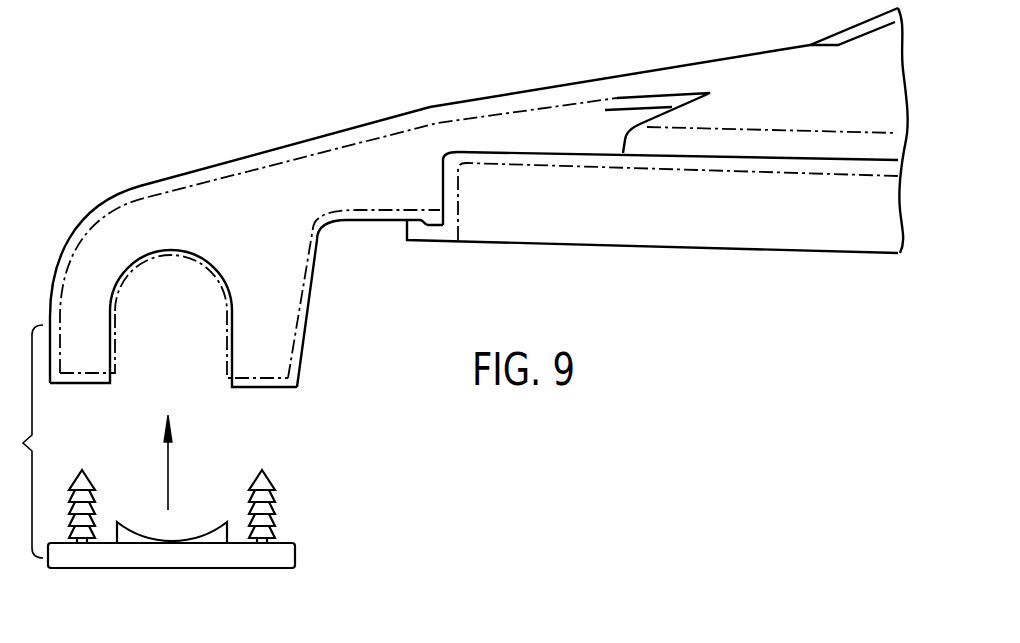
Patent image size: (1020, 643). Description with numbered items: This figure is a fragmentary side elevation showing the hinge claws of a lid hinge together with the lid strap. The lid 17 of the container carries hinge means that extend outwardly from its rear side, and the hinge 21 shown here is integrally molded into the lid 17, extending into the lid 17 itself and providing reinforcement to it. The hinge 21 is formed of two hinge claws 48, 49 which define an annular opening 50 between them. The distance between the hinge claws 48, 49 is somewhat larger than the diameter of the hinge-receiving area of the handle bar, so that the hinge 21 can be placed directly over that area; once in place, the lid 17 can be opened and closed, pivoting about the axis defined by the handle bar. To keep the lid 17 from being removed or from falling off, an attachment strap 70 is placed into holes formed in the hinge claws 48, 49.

The lid 17 is at (842, 238).
The first hinge 21 is at (517, 117).
The hinge claw 48 is at (85, 384).
The hinge claw 49 is at (278, 388).
The annular opening 50 is at (175, 330).
The attachment strap 70 is at (163, 553).